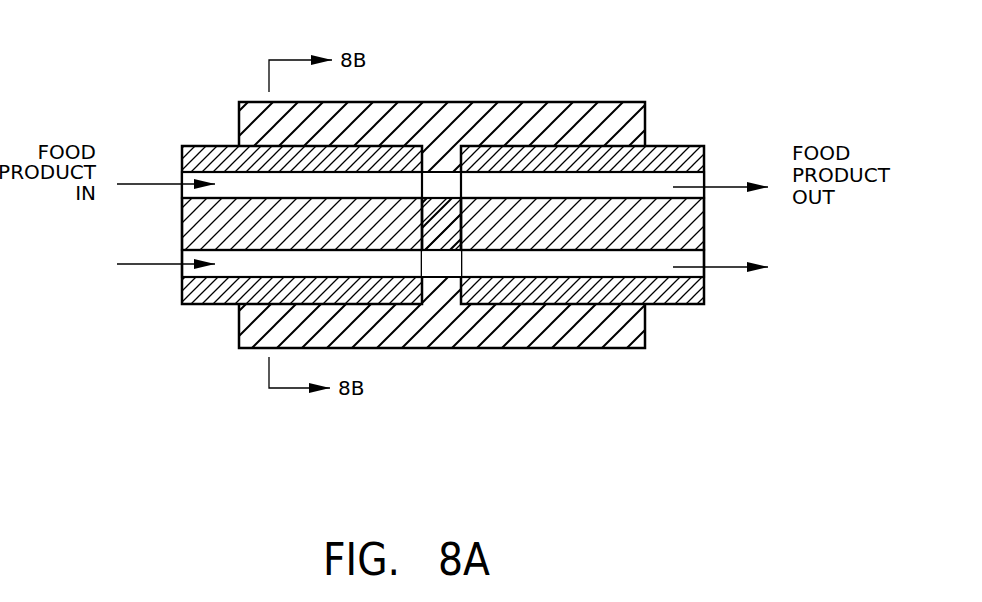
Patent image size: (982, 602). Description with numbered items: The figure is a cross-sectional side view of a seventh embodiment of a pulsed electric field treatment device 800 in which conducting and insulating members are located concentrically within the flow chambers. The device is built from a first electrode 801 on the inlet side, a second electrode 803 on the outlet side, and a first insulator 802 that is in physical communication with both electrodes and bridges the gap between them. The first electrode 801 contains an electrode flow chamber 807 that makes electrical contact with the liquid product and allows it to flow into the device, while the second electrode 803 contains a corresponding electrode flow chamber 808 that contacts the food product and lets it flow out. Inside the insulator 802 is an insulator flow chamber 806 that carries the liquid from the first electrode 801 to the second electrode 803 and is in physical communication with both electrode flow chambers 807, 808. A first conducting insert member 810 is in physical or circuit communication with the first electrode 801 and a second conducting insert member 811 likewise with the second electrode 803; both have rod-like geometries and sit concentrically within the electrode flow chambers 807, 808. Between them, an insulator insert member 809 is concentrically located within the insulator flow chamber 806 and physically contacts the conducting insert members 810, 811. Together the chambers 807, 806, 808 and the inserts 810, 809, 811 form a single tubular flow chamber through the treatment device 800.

The pulsed electric field treatment device 800 is at (165, 355).
The first electrode 801 is at (183, 146).
The first insulator 802 is at (455, 110).
The second electrode 803 is at (690, 147).
The insulator flow chamber 806 is at (440, 185).
The electrode flow chamber 807 is at (242, 185).
The electrode flow chamber 808 is at (643, 185).
The insulator insert member 809 is at (433, 233).
The first conducting insert member 810 is at (233, 236).
The second conducting insert member 811 is at (650, 237).